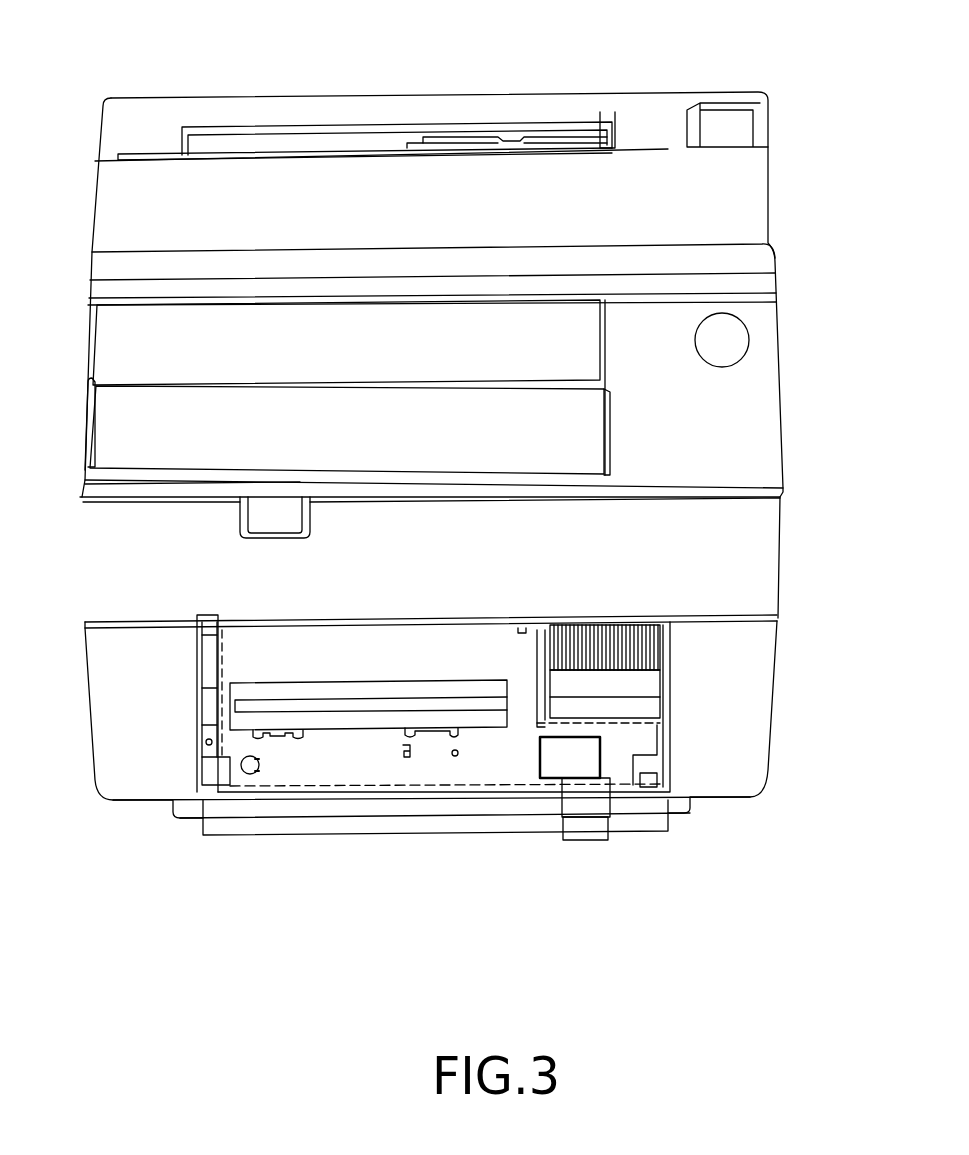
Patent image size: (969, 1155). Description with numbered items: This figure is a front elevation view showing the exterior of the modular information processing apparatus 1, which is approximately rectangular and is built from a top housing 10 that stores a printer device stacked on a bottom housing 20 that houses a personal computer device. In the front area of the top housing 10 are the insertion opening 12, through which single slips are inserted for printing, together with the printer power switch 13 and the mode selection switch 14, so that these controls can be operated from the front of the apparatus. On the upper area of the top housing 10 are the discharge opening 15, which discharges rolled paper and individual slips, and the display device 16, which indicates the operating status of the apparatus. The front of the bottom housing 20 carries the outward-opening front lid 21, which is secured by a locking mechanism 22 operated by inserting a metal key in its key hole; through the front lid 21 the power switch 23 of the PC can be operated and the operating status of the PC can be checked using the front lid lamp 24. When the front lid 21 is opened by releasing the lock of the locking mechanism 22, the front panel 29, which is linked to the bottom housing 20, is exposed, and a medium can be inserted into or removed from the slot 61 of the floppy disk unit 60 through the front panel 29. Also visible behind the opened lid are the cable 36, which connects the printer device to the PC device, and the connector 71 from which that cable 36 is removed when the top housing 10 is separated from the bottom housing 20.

The information processing apparatus 1 is at (882, 727).
The top housing 10 is at (810, 88).
The insertion opening 12 is at (100, 443).
The printer power switch 13 is at (300, 520).
The mode selection switch 14 is at (727, 352).
The discharge opening 15 is at (96, 155).
The display device 16 is at (717, 120).
The bottom housing 20 is at (812, 627).
The front lid 21 is at (427, 833).
The locking mechanism 22 is at (588, 800).
The power switch 23 is at (555, 750).
The front lid lamp 24 is at (405, 756).
The front panel 29 is at (237, 660).
The cable 36 is at (660, 648).
The floppy disk unit 60 is at (390, 690).
The slot 61 is at (474, 697).
The connector 71 is at (650, 710).